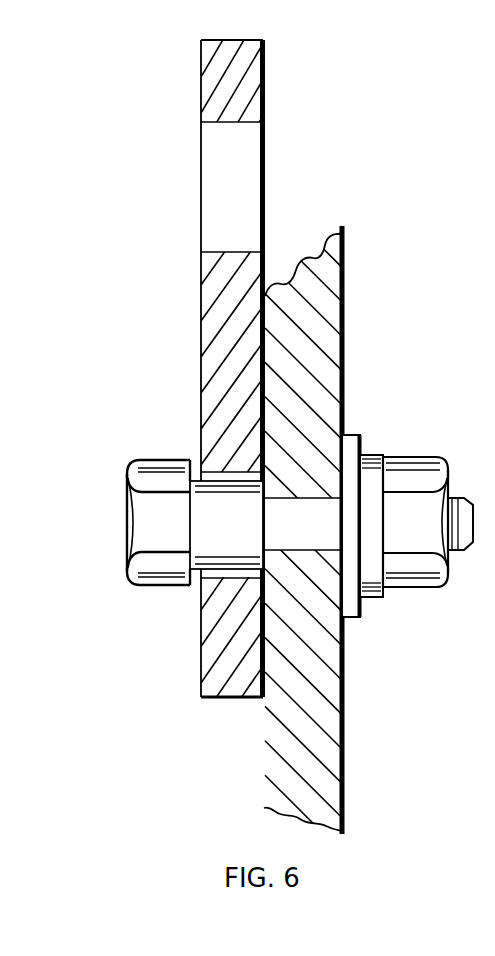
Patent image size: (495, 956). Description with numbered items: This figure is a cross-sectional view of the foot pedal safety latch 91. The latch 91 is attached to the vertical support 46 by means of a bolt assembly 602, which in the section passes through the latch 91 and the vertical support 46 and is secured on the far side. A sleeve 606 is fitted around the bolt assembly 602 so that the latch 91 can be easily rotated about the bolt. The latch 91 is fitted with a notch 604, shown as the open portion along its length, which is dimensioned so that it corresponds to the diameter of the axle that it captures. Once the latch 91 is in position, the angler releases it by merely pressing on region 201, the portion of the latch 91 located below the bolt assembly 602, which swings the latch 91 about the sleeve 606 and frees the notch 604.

The vertical support 46 is at (300, 340).
The foot pedal safety latch 91 is at (233, 80).
The region 201 is at (253, 388).
The bolt assembly 602 is at (142, 468).
The notch 604 is at (235, 165).
The sleeve 606 is at (211, 527).